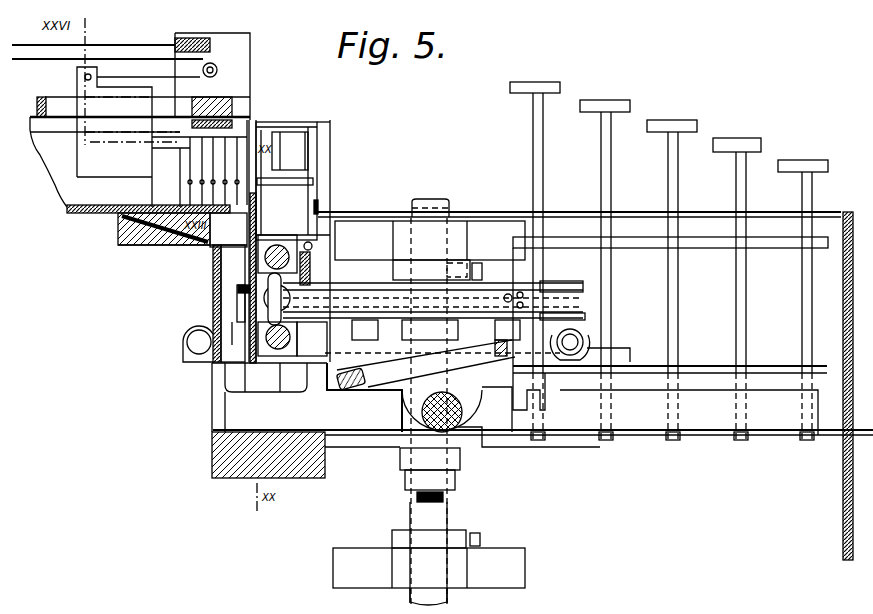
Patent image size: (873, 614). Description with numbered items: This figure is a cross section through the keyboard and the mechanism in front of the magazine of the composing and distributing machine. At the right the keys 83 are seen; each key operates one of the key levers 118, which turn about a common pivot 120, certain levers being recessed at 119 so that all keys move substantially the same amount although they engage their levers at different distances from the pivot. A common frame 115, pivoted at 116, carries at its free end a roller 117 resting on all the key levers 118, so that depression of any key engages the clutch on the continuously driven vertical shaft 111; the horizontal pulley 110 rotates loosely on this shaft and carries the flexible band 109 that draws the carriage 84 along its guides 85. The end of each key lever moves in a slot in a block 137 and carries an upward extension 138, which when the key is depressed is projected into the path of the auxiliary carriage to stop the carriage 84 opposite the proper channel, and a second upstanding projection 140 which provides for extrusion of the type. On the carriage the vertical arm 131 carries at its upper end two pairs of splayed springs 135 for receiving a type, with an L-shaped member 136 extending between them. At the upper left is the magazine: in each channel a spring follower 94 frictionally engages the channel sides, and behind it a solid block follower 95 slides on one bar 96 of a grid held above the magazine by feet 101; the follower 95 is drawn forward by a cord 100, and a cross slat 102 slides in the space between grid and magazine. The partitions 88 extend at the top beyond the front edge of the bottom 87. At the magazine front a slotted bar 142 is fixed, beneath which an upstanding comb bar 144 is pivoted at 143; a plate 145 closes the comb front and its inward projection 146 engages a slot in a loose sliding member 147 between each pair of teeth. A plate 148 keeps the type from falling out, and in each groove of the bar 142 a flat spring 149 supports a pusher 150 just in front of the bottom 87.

The keys 83 is at (537, 82).
The carriage 84 is at (313, 212).
The guides 85 is at (213, 259).
The bottom of the magazine 87 is at (118, 214).
The partitions of the magazine 88 is at (133, 152).
The spring follower 94 is at (199, 163).
The follower 95 is at (85, 77).
The bar of grid 96 is at (38, 106).
The cord 100 is at (106, 38).
The feet 101 is at (252, 120).
The cross slat 102 is at (233, 98).
The flexible band 109 is at (575, 297).
The horizontal pulley 110 is at (568, 283).
The vertical shaft 111 is at (439, 199).
The common frame 115 is at (485, 367).
The pivot of frame 116 is at (578, 341).
The roller 117 is at (348, 390).
The key levers 118 is at (636, 432).
The recess 119 is at (541, 400).
The common pivot 120 is at (472, 430).
The vertical arm 131 is at (228, 120).
The springs 135 is at (297, 122).
The L-shaped member 136 is at (300, 150).
The block 137 is at (325, 473).
The upward extension 138 is at (307, 397).
The upstanding projection 140 is at (227, 383).
The bar 142 is at (154, 270).
The pivot 143 is at (187, 340).
The upstanding bar 144 is at (217, 277).
The plate 145 is at (233, 303).
The inward projection 146 is at (238, 284).
The sliding member 147 is at (232, 328).
The plate 148 is at (254, 201).
The flat spring 149 is at (118, 234).
The pusher 150 is at (238, 227).